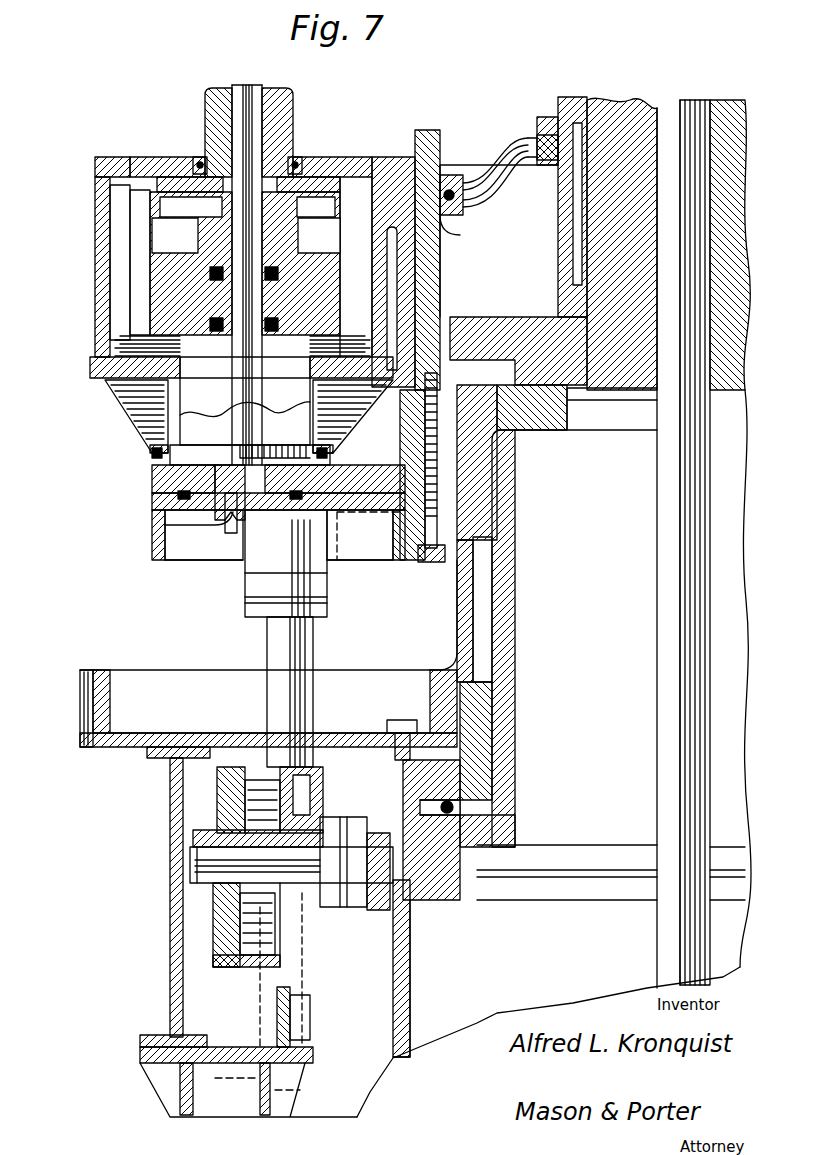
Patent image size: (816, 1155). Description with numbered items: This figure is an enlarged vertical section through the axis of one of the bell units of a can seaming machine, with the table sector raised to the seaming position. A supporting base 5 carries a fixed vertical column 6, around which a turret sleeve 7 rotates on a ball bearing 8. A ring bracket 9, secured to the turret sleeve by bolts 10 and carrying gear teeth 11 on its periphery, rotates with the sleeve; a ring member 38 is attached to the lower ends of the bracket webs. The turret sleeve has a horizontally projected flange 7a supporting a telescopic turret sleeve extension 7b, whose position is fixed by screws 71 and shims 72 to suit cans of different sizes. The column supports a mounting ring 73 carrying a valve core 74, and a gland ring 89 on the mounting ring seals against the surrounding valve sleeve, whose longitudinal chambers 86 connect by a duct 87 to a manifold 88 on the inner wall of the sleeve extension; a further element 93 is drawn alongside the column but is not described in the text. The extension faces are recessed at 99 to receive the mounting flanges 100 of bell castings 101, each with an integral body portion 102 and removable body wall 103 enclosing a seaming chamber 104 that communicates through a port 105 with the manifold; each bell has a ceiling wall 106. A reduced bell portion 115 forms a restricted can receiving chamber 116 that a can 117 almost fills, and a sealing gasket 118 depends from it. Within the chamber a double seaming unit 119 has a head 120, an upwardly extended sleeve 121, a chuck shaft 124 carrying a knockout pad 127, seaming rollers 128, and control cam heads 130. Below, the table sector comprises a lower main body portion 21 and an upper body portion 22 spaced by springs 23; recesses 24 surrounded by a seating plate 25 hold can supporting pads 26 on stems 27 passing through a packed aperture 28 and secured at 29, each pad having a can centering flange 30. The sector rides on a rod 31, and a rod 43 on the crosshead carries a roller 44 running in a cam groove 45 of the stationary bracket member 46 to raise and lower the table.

The supporting base 5 is at (411, 1006).
The column 6 is at (507, 600).
The turret sleeve 7 is at (466, 640).
The horizontally projected flange 7a is at (405, 562).
The turret sleeve extension 7b is at (446, 232).
The ball bearing 8 is at (455, 806).
The ring bracket 9 is at (268, 701).
The bolts 10 is at (408, 720).
The gear teeth 11 is at (84, 742).
The lower main body portion 21 is at (150, 533).
The upper body portion 22 is at (172, 478).
The springs 23 is at (185, 496).
The recesses 24 is at (325, 472).
The seating plate 25 is at (178, 462).
The can supporting pad 26 is at (235, 458).
The stem 27 is at (225, 470).
The packed aperture 28 is at (286, 563).
The stem securing point 29 is at (204, 535).
The can centering flange 30 is at (280, 440).
The rod 31 is at (305, 703).
The ring member 38 is at (185, 1075).
The rod 43 is at (200, 863).
The roller 44 is at (300, 905).
The cam groove 45 is at (348, 840).
The bracket member 46 is at (377, 912).
The screws 71 is at (487, 548).
The shims 72 is at (405, 455).
The mounting ring 73 is at (560, 420).
The valve core 74 is at (622, 128).
The longitudinal chambers 86 is at (578, 263).
The duct 87 is at (510, 138).
The manifold 88 is at (458, 176).
The gland ring 89 is at (520, 432).
The rod 93 is at (700, 108).
The recesses 99 is at (433, 130).
The mounting flanges 100 is at (442, 305).
The bell castings 101 is at (96, 160).
The integral body portion 102 is at (442, 243).
The removable body wall 103 is at (95, 283).
The seaming chamber 104 is at (118, 222).
The port 105 is at (385, 192).
The ceiling wall 106 is at (160, 145).
The bell portion 115 is at (125, 412).
The can receiving chamber 116 is at (178, 425).
The can 117 is at (245, 388).
The sealing gasket 118 is at (135, 437).
The double seaming unit 119 is at (140, 312).
The head 120 is at (155, 265).
The sleeve 121 is at (296, 108).
The chuck shaft 124 is at (240, 85).
The knockout pad 127 is at (245, 403).
The seaming rollers 128 is at (140, 352).
The control cam heads 130 is at (215, 240).